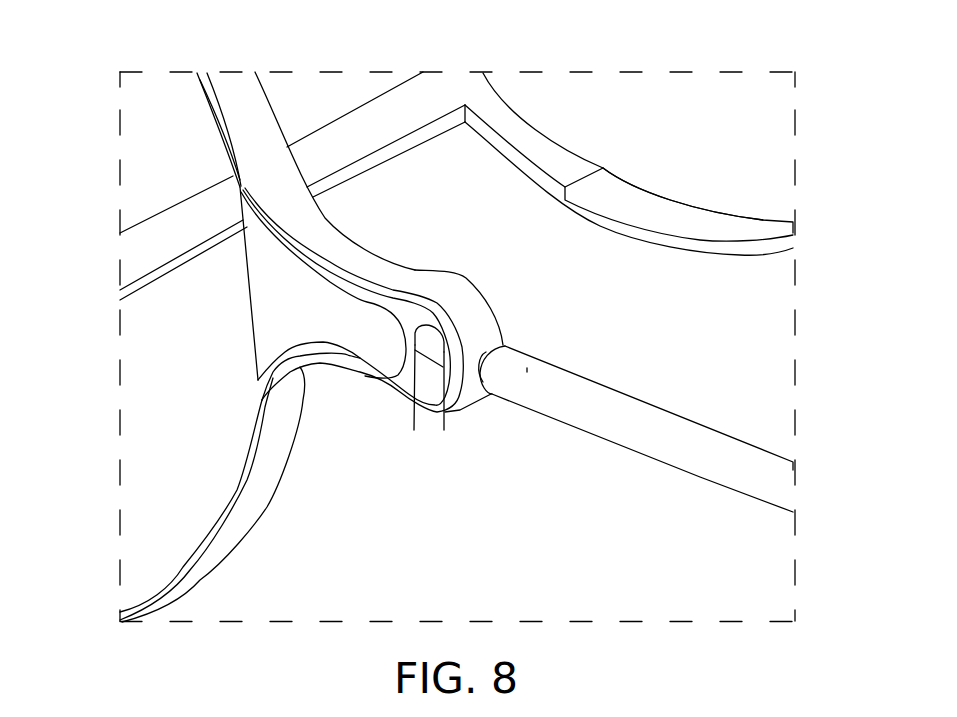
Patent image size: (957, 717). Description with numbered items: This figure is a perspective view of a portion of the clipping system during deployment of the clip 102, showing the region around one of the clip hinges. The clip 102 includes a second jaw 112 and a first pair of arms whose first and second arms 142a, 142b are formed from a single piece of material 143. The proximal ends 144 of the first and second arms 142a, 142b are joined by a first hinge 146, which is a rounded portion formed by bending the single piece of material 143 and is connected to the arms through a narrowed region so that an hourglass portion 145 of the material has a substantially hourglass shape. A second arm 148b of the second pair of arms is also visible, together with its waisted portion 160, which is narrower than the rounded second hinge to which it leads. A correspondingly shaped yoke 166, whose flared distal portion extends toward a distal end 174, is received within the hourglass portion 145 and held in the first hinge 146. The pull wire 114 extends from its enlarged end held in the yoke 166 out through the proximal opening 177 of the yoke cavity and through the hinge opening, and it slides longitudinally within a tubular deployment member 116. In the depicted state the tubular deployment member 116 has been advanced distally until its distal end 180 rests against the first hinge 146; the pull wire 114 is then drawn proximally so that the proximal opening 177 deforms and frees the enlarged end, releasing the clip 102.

The clip 102 is at (497, 107).
The second jaw 112 is at (565, 165).
The pull wire 114 is at (445, 380).
The tubular deployment member 116 is at (622, 413).
The first arm 142a is at (240, 128).
The second arm 142b is at (203, 575).
The single piece of material 143 is at (237, 100).
The proximal ends 144 is at (267, 157).
The hourglass portion 145 is at (368, 273).
The first hinge 146 is at (471, 300).
The second arm 148b is at (697, 225).
The waisted portion 160 is at (498, 340).
The yoke 166 is at (263, 342).
The distal end 174 is at (247, 293).
The proximal opening 177 is at (417, 380).
The distal end 180 is at (527, 368).